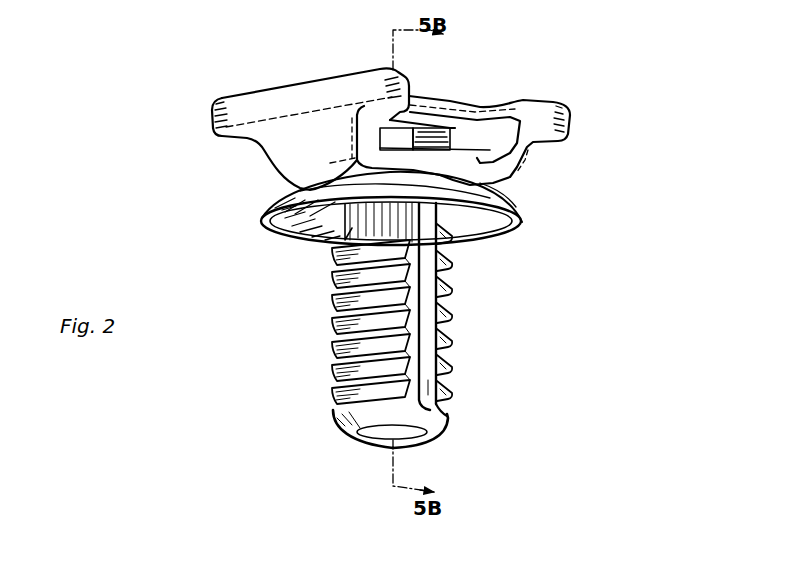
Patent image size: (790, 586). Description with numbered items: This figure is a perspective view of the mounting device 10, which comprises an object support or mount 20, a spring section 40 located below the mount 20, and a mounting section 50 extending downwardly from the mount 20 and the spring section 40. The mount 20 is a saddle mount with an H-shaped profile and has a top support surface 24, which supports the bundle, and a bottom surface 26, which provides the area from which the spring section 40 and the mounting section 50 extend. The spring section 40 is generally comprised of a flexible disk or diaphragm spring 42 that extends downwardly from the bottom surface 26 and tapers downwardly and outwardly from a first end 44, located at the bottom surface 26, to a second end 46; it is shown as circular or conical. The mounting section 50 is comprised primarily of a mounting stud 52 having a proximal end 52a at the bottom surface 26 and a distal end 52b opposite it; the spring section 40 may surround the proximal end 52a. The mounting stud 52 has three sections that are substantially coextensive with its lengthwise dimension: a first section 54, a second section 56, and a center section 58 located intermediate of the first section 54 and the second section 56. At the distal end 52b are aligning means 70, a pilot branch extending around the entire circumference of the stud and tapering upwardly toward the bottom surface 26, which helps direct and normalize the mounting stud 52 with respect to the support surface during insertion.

The mounting device 10 is at (576, 311).
The mount 20 is at (245, 92).
The top support surface 24 is at (516, 98).
The bottom surface 26 is at (505, 200).
The spring section 40 is at (257, 211).
The diaphragm spring 42 is at (300, 240).
The first end 44 is at (313, 188).
The second end 46 is at (262, 224).
The mounting section 50 is at (306, 340).
The mounting stud 52 is at (443, 402).
The proximal end 52a is at (455, 243).
The distal end 52b is at (360, 445).
The first section 54 is at (332, 295).
The second section 56 is at (450, 296).
The center section 58 is at (443, 376).
The aligning means 70 is at (388, 427).